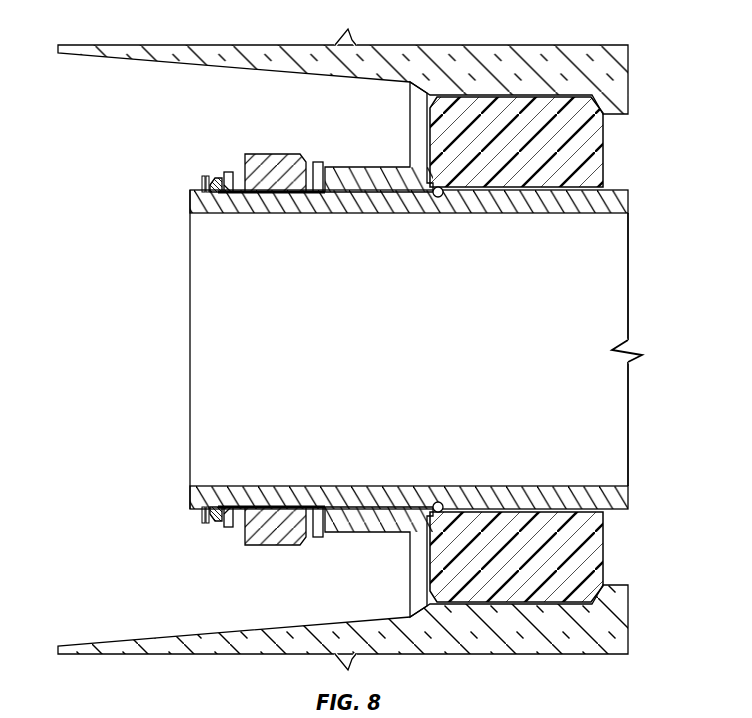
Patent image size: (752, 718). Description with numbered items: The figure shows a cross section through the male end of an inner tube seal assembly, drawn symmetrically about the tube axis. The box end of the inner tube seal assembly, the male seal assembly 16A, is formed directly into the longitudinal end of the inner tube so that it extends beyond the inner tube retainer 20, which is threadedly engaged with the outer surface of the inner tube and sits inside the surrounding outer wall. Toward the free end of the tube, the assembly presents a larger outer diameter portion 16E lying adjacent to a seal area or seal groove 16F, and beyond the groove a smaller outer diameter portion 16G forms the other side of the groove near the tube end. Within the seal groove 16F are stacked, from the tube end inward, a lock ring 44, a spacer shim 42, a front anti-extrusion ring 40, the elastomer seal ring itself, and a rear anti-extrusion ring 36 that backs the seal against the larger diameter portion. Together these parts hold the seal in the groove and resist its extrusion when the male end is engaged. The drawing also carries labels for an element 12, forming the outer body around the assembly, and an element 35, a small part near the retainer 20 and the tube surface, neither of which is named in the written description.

The casing / tubular housing wall 12 is at (165, 58).
The male inner tube seal assembly 16A is at (612, 214).
The smaller outer diameter portion 16G is at (189, 498).
The inner tube retainer 20 is at (604, 150).
The larger outer diameter portion 16E is at (374, 167).
The seal groove 16F is at (275, 194).
The rear anti-extrusion ring 36 is at (320, 194).
The front anti-extrusion ring 40 is at (229, 528).
The spacer shim 42 is at (217, 505).
The lock ring 44 is at (202, 186).
The O-ring 35 is at (439, 199).